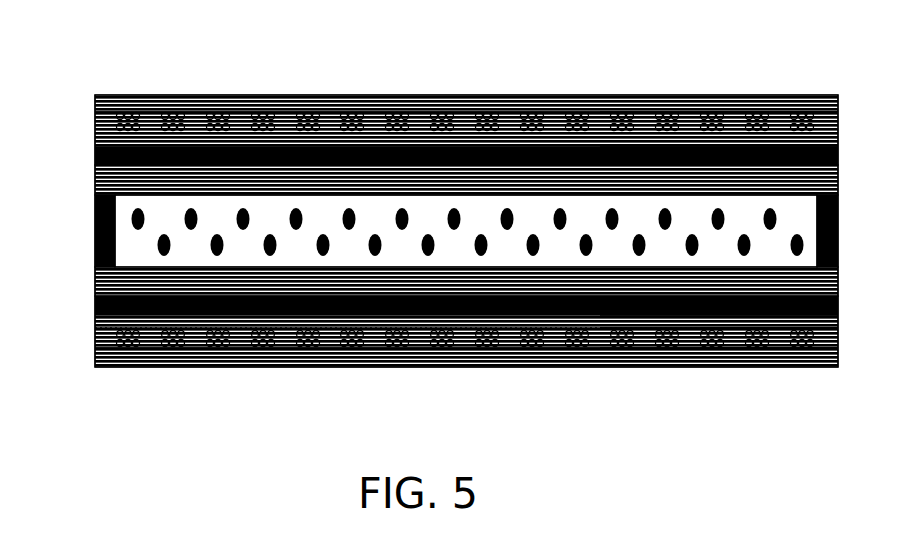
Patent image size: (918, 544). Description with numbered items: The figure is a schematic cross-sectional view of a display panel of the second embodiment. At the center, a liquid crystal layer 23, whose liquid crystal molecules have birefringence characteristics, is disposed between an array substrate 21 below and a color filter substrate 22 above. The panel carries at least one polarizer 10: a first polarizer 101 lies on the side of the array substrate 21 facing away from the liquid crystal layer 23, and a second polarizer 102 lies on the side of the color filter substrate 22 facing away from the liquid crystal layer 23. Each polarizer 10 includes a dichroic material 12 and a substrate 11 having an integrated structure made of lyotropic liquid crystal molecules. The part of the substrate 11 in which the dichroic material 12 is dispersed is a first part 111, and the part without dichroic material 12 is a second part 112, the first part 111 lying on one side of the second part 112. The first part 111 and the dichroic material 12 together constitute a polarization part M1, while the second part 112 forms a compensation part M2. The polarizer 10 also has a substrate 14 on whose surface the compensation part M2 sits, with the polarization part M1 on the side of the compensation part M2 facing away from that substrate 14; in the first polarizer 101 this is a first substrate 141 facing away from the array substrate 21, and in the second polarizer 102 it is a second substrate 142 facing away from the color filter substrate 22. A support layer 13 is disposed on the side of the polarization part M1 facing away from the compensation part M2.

The polarizer 10 is at (328, 58).
The first polarizer 101 is at (466, 371).
The second polarizer 102 is at (466, 92).
The substrate 11 is at (328, 140).
The first part 111 is at (733, 132).
The second part 112 is at (481, 238).
The dichroic material 12 is at (386, 122).
The support layer 13 is at (419, 113).
The substrate 14 is at (466, 156).
The first substrate 141 is at (466, 352).
The second substrate 142 is at (466, 111).
The array substrate 21 is at (138, 282).
The color filter substrate 22 is at (147, 183).
The liquid crystal layer 23 is at (131, 219).
The polarization part M1 is at (728, 58).
The compensation part M2 is at (668, 138).